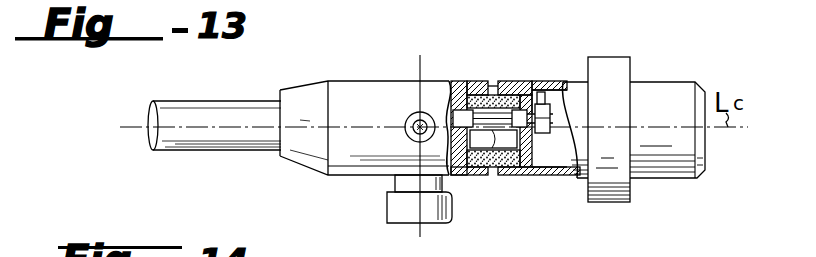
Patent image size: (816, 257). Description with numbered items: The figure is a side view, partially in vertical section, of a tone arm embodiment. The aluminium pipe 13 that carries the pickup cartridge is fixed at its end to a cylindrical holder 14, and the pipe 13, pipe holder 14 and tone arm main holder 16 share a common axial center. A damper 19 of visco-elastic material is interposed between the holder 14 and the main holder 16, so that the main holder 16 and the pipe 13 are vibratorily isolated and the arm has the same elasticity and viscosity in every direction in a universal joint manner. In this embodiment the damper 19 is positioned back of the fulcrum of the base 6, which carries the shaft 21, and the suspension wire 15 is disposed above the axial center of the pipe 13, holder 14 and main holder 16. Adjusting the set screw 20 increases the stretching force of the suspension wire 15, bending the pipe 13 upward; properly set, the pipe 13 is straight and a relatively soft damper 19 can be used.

The pipe portion 13 is at (231, 152).
The cylindrical holder 14 is at (359, 88).
The suspension wire 15 is at (498, 140).
The tone arm main holder 16 is at (656, 88).
The damper member 19 is at (501, 81).
The set screw 20 is at (537, 97).
The shaft 21 is at (405, 182).
The base 6 is at (407, 210).